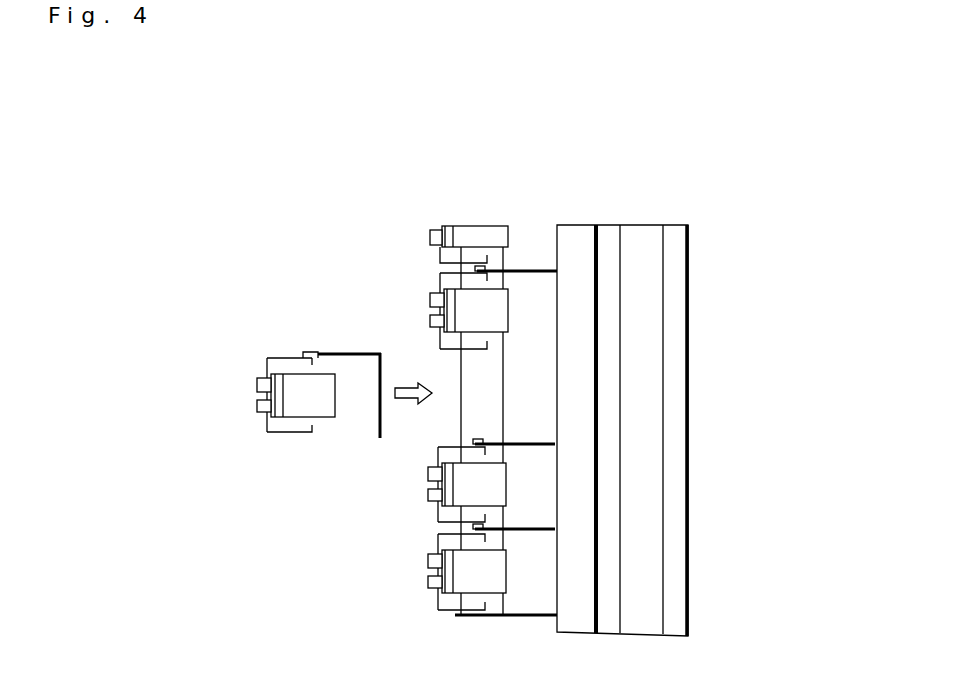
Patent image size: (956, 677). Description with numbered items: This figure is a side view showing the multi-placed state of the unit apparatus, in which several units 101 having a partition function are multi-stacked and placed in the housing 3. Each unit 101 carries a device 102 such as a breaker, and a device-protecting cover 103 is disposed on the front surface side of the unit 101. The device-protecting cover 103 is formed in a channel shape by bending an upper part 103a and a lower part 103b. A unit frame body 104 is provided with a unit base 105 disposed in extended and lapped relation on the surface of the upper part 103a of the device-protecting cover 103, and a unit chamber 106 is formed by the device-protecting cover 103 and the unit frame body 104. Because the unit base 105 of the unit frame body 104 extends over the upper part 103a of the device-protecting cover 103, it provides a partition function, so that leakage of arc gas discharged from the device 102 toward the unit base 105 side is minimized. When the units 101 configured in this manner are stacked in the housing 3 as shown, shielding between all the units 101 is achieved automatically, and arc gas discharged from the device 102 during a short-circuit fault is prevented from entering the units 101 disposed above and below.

The housing 3 is at (641, 232).
The unit 101 is at (257, 385).
The device 102 is at (300, 418).
The device-protecting cover 103 is at (262, 363).
The upper part 103a is at (288, 357).
The lower part 103b is at (283, 433).
The unit frame body 104 is at (391, 351).
The unit base 105 is at (340, 353).
The unit chamber 106 is at (378, 410).